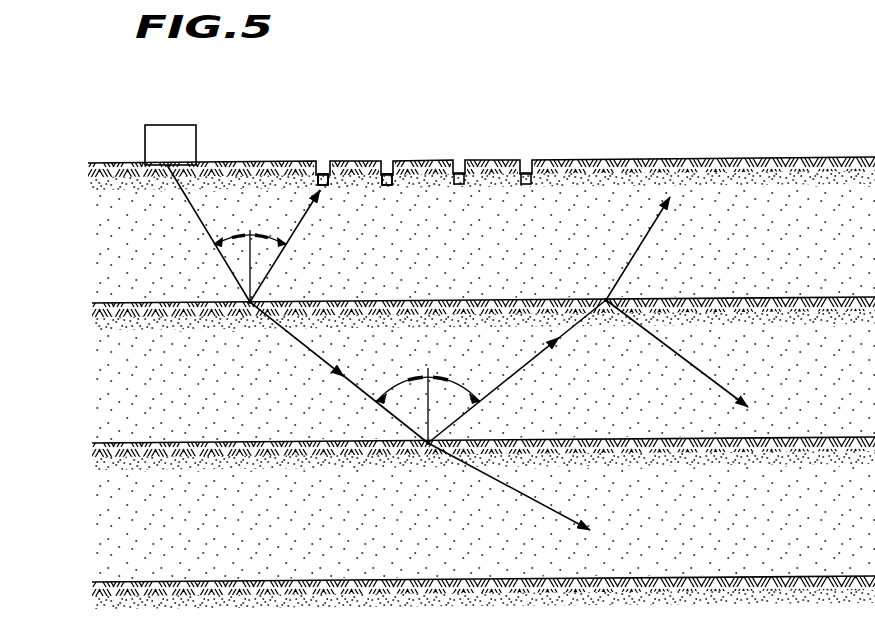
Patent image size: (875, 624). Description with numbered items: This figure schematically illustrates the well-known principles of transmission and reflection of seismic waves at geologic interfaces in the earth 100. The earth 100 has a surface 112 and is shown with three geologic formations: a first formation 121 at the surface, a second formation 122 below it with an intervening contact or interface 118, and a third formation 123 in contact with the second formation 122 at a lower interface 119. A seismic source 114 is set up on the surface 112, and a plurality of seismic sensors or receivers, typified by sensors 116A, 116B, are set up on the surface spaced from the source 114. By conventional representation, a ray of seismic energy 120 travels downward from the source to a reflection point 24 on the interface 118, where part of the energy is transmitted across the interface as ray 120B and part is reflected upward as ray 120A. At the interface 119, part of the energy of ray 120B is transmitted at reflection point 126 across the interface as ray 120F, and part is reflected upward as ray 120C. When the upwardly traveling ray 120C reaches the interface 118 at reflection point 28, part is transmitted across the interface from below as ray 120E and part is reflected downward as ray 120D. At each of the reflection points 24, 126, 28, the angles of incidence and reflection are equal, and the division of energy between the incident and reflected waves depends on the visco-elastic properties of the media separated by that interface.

The surface 112 is at (114, 163).
The seismic source 114 is at (184, 125).
The earth 100 is at (309, 152).
The seismic sensor 116A is at (322, 170).
The seismic sensor 116B is at (392, 170).
The interface 118 is at (100, 303).
The interface 119 is at (100, 445).
The geologic formation 121 is at (136, 214).
The geologic formation 122 is at (141, 383).
The geologic formation 123 is at (158, 529).
The ray of seismic energy 120 is at (199, 223).
The upwardly reflected ray 120A is at (293, 245).
The transmitted ray 120B is at (318, 365).
The reflected ray 120C is at (497, 390).
The downwardly reflected ray 120D is at (708, 375).
The transmitted ray 120E is at (635, 257).
The transmitted ray 120F is at (568, 510).
The reflection point 24 is at (250, 305).
The reflection point 126 is at (428, 446).
The reflection point 28 is at (606, 303).